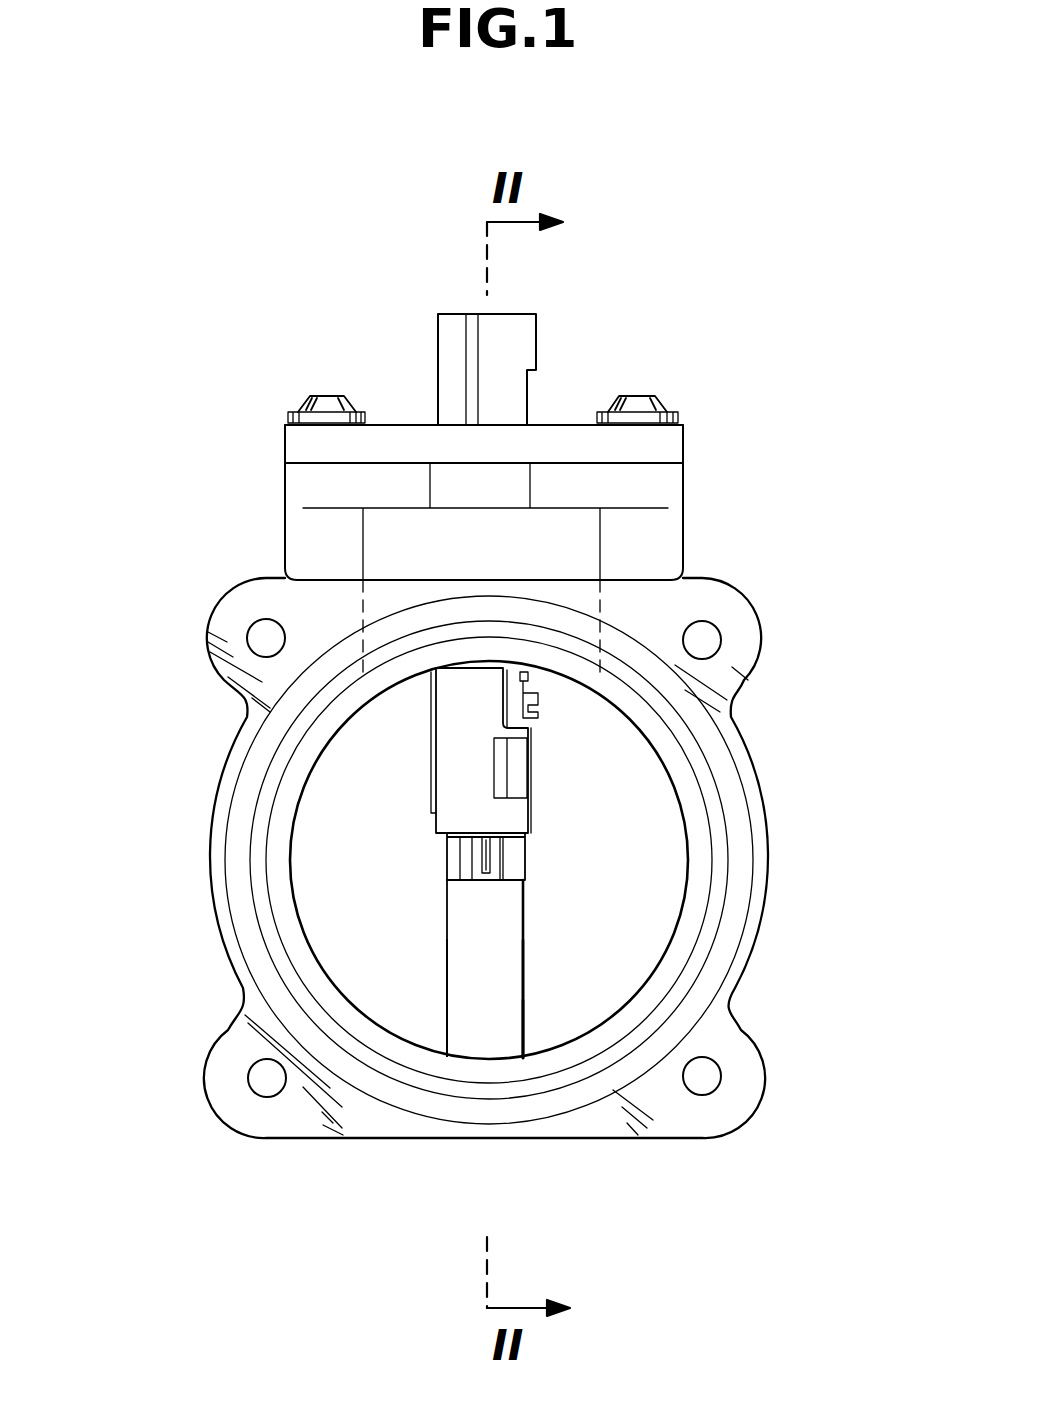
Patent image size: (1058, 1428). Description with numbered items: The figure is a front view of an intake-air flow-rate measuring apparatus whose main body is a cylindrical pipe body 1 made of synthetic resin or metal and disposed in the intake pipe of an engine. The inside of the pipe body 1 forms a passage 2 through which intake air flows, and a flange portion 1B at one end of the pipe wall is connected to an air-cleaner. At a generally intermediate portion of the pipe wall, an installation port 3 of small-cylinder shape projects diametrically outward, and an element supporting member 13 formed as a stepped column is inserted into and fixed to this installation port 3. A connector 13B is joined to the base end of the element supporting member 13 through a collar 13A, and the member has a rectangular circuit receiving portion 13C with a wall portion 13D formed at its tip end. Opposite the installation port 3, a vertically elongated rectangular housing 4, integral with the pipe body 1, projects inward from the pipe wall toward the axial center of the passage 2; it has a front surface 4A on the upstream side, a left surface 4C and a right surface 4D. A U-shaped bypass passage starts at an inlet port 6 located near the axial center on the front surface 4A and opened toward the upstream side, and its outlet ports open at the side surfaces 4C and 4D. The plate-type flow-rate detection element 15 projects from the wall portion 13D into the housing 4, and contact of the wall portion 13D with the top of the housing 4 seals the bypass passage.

The pipe body 1 is at (768, 815).
The flange portion 1B is at (733, 667).
The passage 2 is at (351, 947).
The installation port 3 is at (670, 490).
The housing 4 is at (507, 928).
The front surface 4A is at (488, 1028).
The left surface 4C is at (447, 987).
The right surface 4D is at (523, 987).
The inlet port 6 is at (458, 860).
The element supporting member 13 is at (459, 570).
The collar 13A is at (672, 443).
The connector 13B is at (498, 328).
The circuit receiving portion 13C is at (463, 733).
The wall portion 13D is at (447, 837).
The flow-rate detection element 15 is at (488, 852).